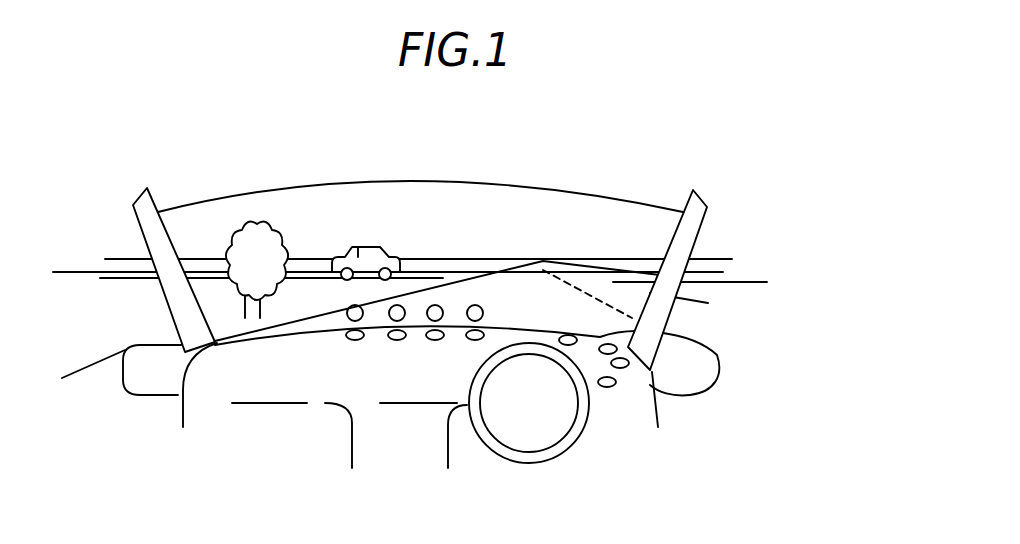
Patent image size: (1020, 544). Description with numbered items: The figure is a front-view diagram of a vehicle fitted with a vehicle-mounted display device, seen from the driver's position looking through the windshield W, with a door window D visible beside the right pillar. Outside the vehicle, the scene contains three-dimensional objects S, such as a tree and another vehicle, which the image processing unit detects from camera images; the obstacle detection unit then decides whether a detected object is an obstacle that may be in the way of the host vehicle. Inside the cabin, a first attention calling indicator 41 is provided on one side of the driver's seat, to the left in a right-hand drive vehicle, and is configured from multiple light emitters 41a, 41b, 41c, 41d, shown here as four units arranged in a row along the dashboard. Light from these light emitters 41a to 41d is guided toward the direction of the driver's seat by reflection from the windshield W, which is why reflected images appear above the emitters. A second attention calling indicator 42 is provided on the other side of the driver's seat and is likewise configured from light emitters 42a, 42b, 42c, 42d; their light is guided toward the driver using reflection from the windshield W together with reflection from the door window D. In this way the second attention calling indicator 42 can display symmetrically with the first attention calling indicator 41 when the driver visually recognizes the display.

The first attention calling indicator 41 is at (368, 376).
The light emitter 41a is at (348, 340).
The light emitter 41b is at (390, 340).
The light emitter 41c is at (428, 340).
The light emitter 41d is at (448, 350).
The second attention calling indicator 42 is at (713, 406).
The light emitter 42a is at (616, 383).
The light emitter 42b is at (629, 364).
The light emitter 42c is at (617, 350).
The light emitter 42d is at (577, 340).
The three-dimensional object S is at (256, 226).
The windshield W is at (590, 218).
The door window D is at (711, 287).